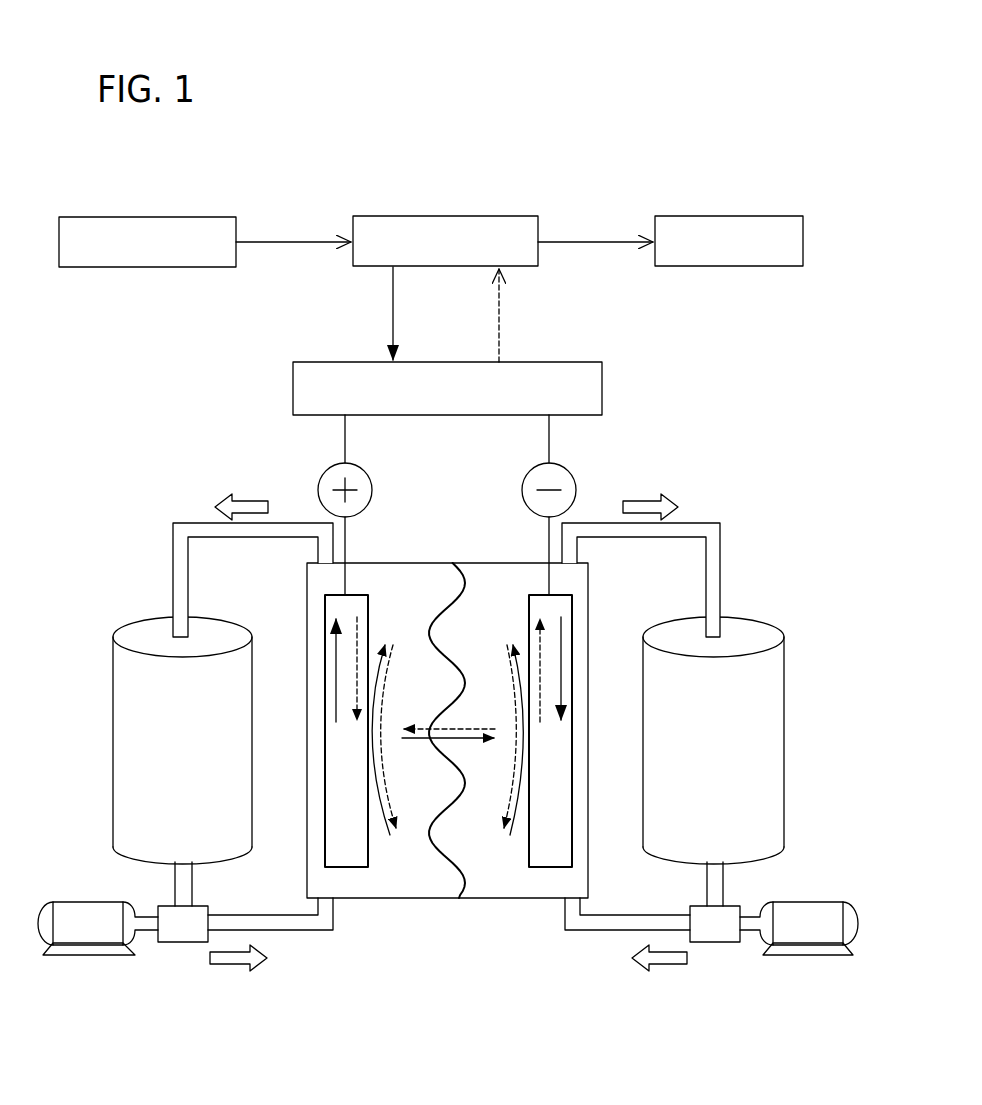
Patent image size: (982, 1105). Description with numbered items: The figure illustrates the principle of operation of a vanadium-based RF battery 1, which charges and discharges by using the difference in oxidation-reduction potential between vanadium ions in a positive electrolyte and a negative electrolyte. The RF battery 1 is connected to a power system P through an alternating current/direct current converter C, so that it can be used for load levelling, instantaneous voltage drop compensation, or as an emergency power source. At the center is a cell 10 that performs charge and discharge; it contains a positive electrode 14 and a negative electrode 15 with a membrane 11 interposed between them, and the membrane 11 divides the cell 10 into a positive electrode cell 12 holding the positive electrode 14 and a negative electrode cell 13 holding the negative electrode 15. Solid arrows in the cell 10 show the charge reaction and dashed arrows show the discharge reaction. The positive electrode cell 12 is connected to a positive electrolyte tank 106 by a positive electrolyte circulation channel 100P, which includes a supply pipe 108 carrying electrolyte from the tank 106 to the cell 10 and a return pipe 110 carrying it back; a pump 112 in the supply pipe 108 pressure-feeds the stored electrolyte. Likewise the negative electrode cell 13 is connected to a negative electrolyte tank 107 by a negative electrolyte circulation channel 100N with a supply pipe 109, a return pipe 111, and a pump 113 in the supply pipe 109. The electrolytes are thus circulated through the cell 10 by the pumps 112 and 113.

The RF battery 1 is at (449, 620).
The cell 10 is at (530, 1000).
The membrane 11 is at (452, 898).
The positive electrode cell 12 is at (380, 900).
The negative electrode cell 13 is at (520, 898).
The positive electrode 14 is at (325, 858).
The negative electrode 15 is at (572, 858).
The positive electrolyte tank 106 is at (130, 622).
The negative electrolyte tank 107 is at (760, 625).
The supply pipe 108 is at (295, 925).
The supply pipe 109 is at (605, 925).
The return pipe 110 is at (188, 523).
The return pipe 111 is at (701, 523).
The pump 112 is at (70, 900).
The pump 113 is at (825, 900).
The positive electrolyte circulation channel 100P is at (114, 948).
The negative electrolyte circulation channel 100N is at (782, 948).
The power system P is at (657, 197).
The alternating current/direct current converter C is at (602, 388).